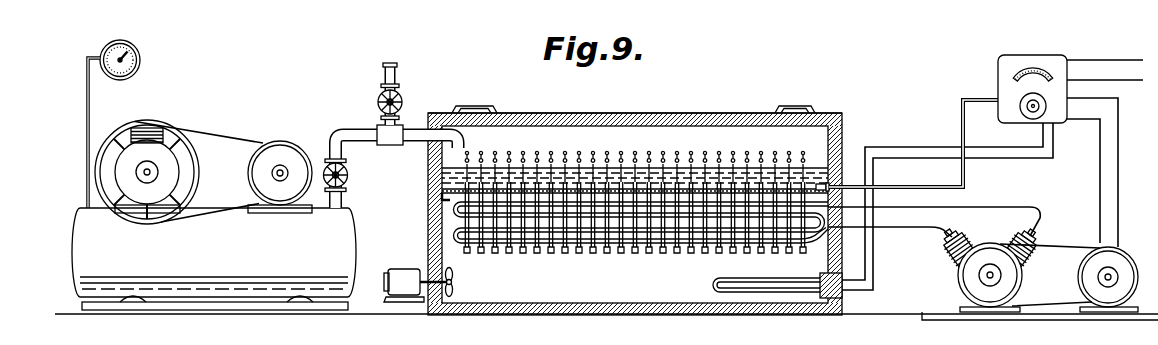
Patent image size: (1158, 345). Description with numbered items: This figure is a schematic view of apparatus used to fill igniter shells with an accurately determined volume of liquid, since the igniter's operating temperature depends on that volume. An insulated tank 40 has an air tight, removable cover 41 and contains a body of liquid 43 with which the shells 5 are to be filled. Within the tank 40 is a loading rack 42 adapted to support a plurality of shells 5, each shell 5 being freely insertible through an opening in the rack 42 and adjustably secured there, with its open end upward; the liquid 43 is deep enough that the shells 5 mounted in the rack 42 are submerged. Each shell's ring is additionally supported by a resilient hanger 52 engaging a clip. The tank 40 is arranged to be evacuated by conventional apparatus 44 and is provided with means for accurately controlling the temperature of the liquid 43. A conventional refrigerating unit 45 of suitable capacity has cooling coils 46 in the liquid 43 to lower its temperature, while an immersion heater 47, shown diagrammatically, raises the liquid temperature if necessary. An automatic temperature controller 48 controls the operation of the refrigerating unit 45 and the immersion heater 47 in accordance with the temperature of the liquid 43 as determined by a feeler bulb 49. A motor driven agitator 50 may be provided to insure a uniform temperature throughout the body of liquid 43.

The shell 5 is at (591, 253).
The insulated tank 40 is at (843, 130).
The cover 41 is at (740, 113).
The loading rack 42 is at (453, 190).
The body of liquid 43 is at (451, 168).
The evacuating apparatus 44 is at (214, 175).
The refrigerating unit 45 is at (1037, 248).
The cooling coils 46 is at (703, 250).
The immersion heater 47 is at (760, 278).
The automatic temperature controller 48 is at (998, 64).
The feeler bulb 49 is at (819, 183).
The motor driven agitator 50 is at (455, 284).
The resilient hanger 52 is at (539, 157).